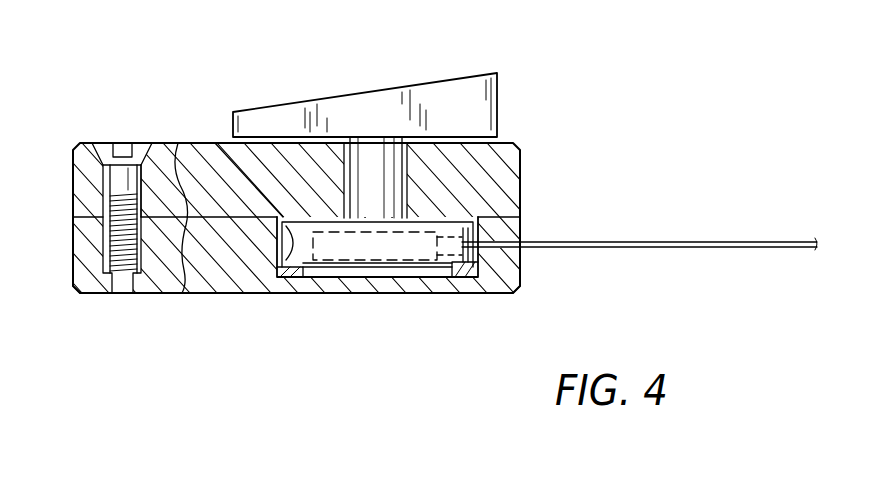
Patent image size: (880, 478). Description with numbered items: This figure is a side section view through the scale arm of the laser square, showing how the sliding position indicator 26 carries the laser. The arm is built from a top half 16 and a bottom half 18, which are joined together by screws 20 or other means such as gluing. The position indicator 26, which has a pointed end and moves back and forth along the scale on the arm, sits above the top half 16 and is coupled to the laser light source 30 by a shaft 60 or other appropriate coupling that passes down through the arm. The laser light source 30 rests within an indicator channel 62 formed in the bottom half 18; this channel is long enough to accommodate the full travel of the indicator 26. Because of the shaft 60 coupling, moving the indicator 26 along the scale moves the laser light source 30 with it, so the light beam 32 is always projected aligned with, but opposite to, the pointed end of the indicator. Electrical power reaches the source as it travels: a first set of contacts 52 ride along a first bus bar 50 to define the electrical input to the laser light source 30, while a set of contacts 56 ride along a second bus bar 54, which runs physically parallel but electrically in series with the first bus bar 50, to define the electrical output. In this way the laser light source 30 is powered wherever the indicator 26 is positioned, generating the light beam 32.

The top half 16 is at (505, 167).
The bottom half 18 is at (228, 280).
The screw 20 is at (116, 150).
The position indicator 26 is at (485, 80).
The laser light source 30 is at (423, 255).
The light beam 32 is at (679, 240).
The first bus bar 50 is at (462, 272).
The first set of contacts 52 is at (472, 243).
The second bus bar 54 is at (298, 275).
The set of contacts 56 is at (215, 143).
The shaft 60 is at (375, 158).
The indicator channel 62 is at (375, 268).